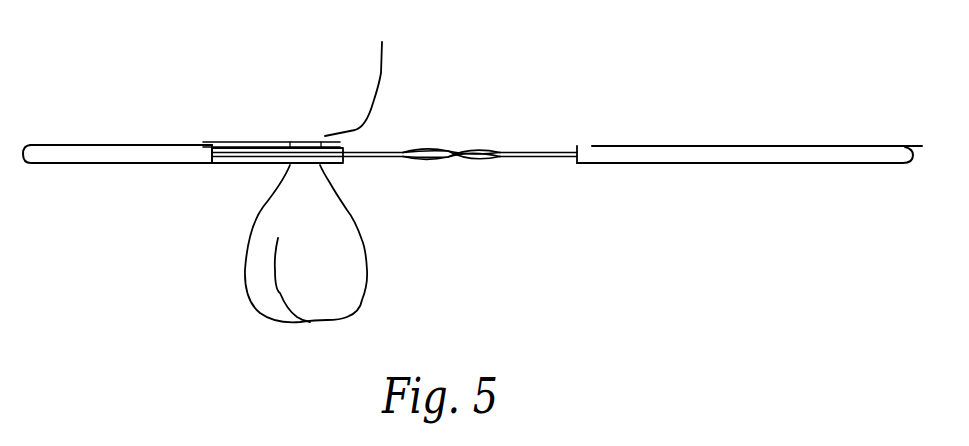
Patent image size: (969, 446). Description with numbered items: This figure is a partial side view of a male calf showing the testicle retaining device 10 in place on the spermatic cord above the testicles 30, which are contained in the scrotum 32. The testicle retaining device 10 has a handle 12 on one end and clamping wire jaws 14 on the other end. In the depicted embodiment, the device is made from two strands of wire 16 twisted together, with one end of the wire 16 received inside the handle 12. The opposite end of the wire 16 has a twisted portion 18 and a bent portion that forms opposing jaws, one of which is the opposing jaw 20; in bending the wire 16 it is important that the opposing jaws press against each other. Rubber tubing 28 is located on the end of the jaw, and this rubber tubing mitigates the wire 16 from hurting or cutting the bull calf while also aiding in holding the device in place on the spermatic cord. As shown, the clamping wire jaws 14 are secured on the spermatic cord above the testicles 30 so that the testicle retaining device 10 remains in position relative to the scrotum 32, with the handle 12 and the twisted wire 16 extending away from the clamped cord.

The testicle retaining device 10 is at (577, 67).
The handle 12 is at (809, 145).
The clamping wire jaws 14 is at (150, 165).
The wire 16 is at (532, 150).
The twisted portion 18 is at (463, 147).
The opposing jaw 20 is at (115, 144).
The rubber tubing 28 is at (288, 171).
The testicles 30 is at (347, 268).
The scrotum 32 is at (347, 210).